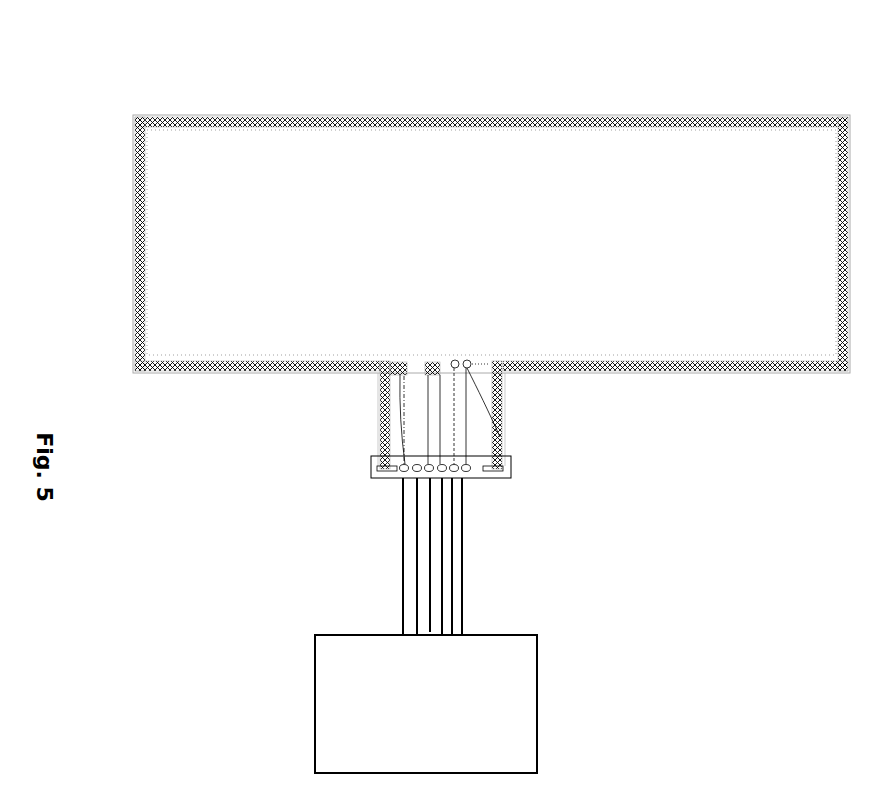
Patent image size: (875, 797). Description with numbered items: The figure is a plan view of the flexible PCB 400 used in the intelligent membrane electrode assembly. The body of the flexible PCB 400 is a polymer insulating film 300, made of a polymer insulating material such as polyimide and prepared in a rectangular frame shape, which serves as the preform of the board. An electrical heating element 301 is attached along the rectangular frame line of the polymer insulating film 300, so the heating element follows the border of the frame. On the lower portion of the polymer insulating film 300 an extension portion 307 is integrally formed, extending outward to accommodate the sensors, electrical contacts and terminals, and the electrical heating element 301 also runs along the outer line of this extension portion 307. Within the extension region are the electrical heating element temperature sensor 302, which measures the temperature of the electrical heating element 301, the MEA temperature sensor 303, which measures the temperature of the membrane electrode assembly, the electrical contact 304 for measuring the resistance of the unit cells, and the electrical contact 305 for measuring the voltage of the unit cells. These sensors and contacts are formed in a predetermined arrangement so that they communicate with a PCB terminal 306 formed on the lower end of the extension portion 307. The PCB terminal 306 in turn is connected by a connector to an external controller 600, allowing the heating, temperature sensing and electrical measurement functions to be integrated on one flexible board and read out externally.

The polymer insulating film 300 is at (581, 115).
The electrical heating element 301 is at (671, 123).
The flexible PCB 400 is at (492, 97).
The electrical heating element temperature sensor 302 is at (378, 379).
The MEA temperature sensor 303 is at (427, 376).
The electrical contact for measuring resistance 304 is at (510, 376).
The electrical contact for measuring voltage 305 is at (504, 437).
The PCB terminal 306 is at (478, 474).
The extension portion 307 is at (505, 440).
The external controller 600 is at (426, 704).